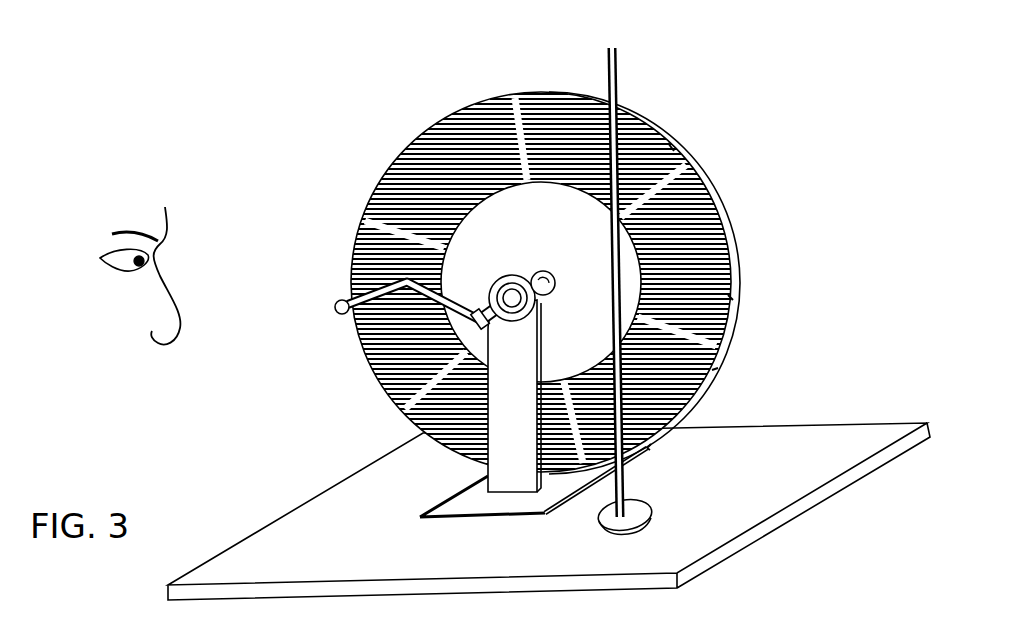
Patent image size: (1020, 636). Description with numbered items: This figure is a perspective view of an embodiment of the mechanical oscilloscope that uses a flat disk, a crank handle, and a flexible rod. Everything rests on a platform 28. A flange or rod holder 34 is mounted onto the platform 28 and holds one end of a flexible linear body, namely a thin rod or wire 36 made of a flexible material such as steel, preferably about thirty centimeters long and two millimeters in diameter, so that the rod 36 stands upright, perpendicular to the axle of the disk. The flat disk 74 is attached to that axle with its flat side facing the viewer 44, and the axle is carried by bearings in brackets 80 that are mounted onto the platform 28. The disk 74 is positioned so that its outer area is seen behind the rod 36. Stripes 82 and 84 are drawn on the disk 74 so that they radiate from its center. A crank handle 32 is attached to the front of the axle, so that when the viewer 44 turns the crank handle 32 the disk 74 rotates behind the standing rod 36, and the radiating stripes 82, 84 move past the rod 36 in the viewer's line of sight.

The platform 28 is at (313, 522).
The crank handle 32 is at (347, 297).
The rod holder 34 is at (630, 518).
The rod 36 is at (617, 73).
The viewer 44 is at (128, 349).
The flat disk 74 is at (562, 95).
The brackets 80 is at (535, 480).
The stripes 82 is at (668, 143).
The stripes 84 is at (507, 100).